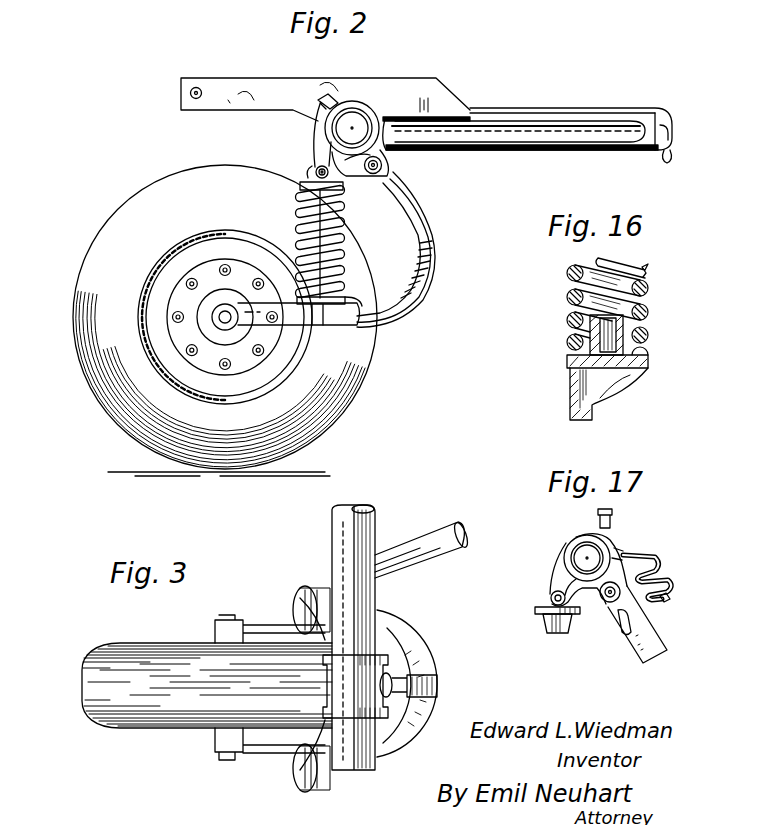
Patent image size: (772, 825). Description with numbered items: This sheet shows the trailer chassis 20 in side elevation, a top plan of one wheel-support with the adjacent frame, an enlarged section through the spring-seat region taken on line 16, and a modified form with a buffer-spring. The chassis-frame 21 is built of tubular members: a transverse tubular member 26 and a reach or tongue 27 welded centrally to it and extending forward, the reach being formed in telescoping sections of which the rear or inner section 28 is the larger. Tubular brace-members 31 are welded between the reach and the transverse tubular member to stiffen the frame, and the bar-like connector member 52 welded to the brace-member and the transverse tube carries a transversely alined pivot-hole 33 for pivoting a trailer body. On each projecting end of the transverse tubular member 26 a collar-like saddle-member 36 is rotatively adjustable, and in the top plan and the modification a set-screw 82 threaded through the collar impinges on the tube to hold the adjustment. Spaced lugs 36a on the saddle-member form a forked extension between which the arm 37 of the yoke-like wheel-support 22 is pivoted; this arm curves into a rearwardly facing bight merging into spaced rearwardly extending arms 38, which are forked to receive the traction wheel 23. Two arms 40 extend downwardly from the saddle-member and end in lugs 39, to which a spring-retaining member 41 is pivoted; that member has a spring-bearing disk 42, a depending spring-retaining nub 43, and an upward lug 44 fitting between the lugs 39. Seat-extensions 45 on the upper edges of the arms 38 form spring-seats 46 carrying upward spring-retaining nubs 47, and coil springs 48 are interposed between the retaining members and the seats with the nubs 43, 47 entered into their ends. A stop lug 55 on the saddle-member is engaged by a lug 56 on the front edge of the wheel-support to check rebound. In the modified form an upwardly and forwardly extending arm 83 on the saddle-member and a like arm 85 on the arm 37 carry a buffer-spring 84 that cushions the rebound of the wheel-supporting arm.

In FIG. 2, the section line 16— 16 is at (308, 242).
In FIG. 2, the chassis 20 is at (495, 107).
In FIG. 17, the chassis 20 is at (584, 594).
In FIG. 3, the chassis 20 is at (382, 590).
In FIG. 2, the chassis-frame 21 is at (544, 156).
In FIG. 17, the chassis-frame 21 is at (571, 541).
In FIG. 3, the chassis-frame 21 is at (331, 527).
In FIG. 2, the wheel-support 22 is at (428, 256).
In FIG. 17, the wheel-support 22 is at (663, 639).
In FIG. 3, the wheel-support 22 is at (420, 642).
In FIG. 2, the traction wheel 23 is at (90, 291).
In FIG. 3, the traction wheel 23 is at (143, 652).
In FIG. 2, the transverse tubular member 26 is at (371, 114).
In FIG. 3, the transverse tubular member 26 is at (367, 540).
In FIG. 2, the reach or tongue 27 is at (645, 114).
In FIG. 2, the rear or inner section of the reach 28 is at (658, 151).
In FIG. 2, the tubular brace-member 31 is at (493, 133).
In FIG. 3, the tubular brace-member 31 is at (440, 541).
In FIG. 2, the pivot-hole 33 is at (189, 93).
In FIG. 2, the saddle-member 36 is at (380, 120).
In FIG. 17, the saddle-member 36 is at (578, 537).
In FIG. 3, the saddle-member 36 is at (326, 677).
In FIG. 2, the lugs forming forked extension 36a is at (390, 160).
In FIG. 17, the lugs forming forked extension 36a is at (622, 604).
In FIG. 2, the upwardly and rearwardly extending arm 37 is at (412, 213).
In FIG. 17, the upwardly and rearwardly extending arm 37 is at (642, 653).
In FIG. 3, the upwardly and rearwardly extending arm 37 is at (438, 687).
In FIG. 2, the rearwardly extending arm 38 is at (334, 313).
In FIG. 16, the rearwardly extending arm 38 is at (570, 389).
In FIG. 3, the rearwardly extending arm 38 is at (383, 622).
In FIG. 2, the lug 39 is at (317, 166).
In FIG. 17, the lug 39 is at (555, 592).
In FIG. 3, the lug 39 is at (305, 577).
In FIG. 2, the arm of saddle-member 40 is at (323, 148).
In FIG. 17, the arm of saddle-member 40 is at (562, 568).
In FIG. 3, the arm of saddle-member 40 is at (308, 628).
In FIG. 2, the spring-retaining member 41 is at (358, 183).
In FIG. 17, the spring-retaining member 41 is at (554, 622).
In FIG. 3, the spring-retaining member 41 is at (303, 773).
In FIG. 2, the spring-bearing disk 42 is at (304, 185).
In FIG. 17, the spring-bearing disk 42 is at (537, 612).
In FIG. 3, the spring-bearing disk 42 is at (298, 596).
In FIG. 2, the spring-retaining nub 43 is at (338, 194).
In FIG. 17, the spring-retaining nub 43 is at (562, 630).
In FIG. 2, the lug of spring-retaining member 44 is at (314, 178).
In FIG. 3, the lug of spring-retaining member 44 is at (318, 598).
In FIG. 2, the seat-extension 45 is at (310, 303).
In FIG. 16, the seat-extension 45 is at (613, 376).
In FIG. 2, the spring-seat 46 is at (338, 303).
In FIG. 16, the spring-seat 46 is at (647, 350).
In FIG. 2, the spring-retaining nub 47 is at (298, 285).
In FIG. 16, the spring-retaining nub 47 is at (590, 332).
In FIG. 2, the coil spring 48 is at (347, 253).
In FIG. 16, the coil spring 48 is at (649, 290).
In FIG. 2, the bracket plate 52 is at (291, 84).
In FIG. 2, the stop lug 55 is at (446, 128).
In FIG. 17, the stop lug 55 is at (639, 567).
In FIG. 2, the lug on wheel-supporting member 56 is at (401, 156).
In FIG. 17, the lug on wheel-supporting member 56 is at (662, 578).
In FIG. 17, the set-screw 82 is at (610, 525).
In FIG. 17, the upwardly and forwardly extending arm of saddle-member 83 is at (630, 554).
In FIG. 17, the buffer-spring 84 is at (673, 579).
In FIG. 17, the upwardly and forwardly extending arm of wheel-supporting arm 85 is at (670, 598).